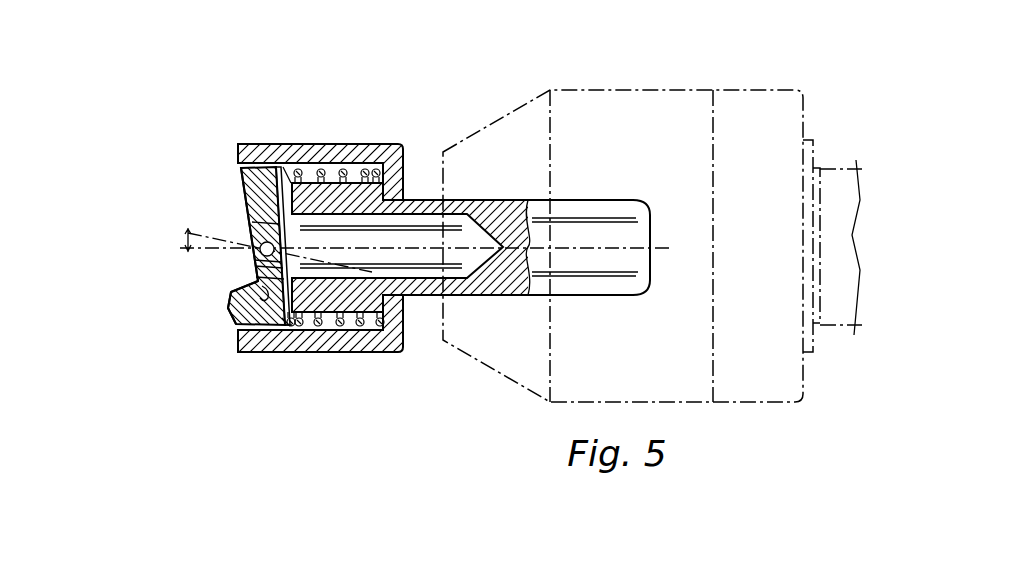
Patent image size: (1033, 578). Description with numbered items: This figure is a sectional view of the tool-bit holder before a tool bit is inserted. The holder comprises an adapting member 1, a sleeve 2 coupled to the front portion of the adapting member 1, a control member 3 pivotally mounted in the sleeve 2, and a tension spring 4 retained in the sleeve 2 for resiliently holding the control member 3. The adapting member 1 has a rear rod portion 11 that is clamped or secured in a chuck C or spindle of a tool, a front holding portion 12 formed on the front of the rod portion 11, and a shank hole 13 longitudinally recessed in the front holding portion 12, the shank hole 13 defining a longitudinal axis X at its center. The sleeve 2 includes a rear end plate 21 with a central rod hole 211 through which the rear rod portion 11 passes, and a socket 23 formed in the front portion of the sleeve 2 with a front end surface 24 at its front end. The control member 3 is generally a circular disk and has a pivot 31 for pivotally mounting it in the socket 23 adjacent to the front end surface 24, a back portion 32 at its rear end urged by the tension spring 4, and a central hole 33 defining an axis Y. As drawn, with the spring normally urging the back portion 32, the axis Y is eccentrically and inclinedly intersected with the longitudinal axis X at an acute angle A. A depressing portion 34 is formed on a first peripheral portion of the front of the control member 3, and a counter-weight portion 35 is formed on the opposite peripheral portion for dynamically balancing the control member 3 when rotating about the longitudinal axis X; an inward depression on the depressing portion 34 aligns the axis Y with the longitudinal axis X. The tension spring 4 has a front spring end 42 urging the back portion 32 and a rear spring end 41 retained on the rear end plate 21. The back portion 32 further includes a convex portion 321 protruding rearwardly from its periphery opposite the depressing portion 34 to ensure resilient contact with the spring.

The adapting member 1 is at (432, 192).
The rear rod portion 11 is at (498, 198).
The front holding portion 12 is at (393, 186).
The shank hole 13 is at (394, 343).
The sleeve 2 is at (308, 363).
The rear end plate 21 is at (399, 292).
The central rod hole 211 is at (437, 346).
The socket 23 is at (323, 169).
The front end surface 24 is at (240, 148).
The control member 3 is at (243, 324).
The pivot 31 is at (279, 176).
The back portion 32 is at (250, 352).
The convex portion 321 is at (287, 336).
The central hole 33 is at (257, 267).
The depressing portion 34 is at (228, 311).
The counter-weight portion 35 is at (237, 182).
The tension spring 4 is at (334, 344).
The rear spring end 41 is at (386, 165).
The front spring end 42 is at (288, 176).
The chuck C is at (688, 82).
The longitudinal axis X is at (668, 254).
The axis Y is at (189, 232).
The acute angle A is at (186, 238).